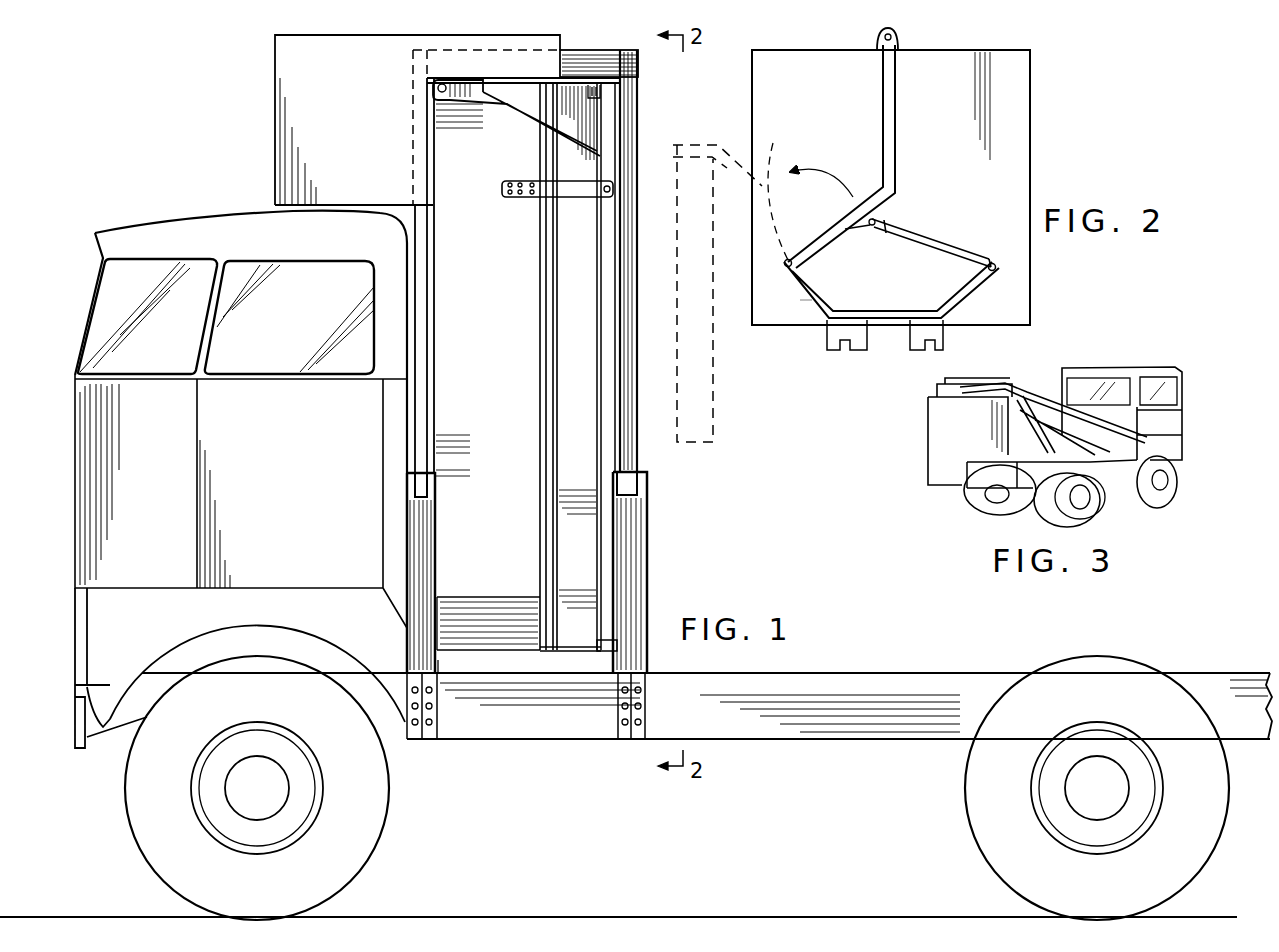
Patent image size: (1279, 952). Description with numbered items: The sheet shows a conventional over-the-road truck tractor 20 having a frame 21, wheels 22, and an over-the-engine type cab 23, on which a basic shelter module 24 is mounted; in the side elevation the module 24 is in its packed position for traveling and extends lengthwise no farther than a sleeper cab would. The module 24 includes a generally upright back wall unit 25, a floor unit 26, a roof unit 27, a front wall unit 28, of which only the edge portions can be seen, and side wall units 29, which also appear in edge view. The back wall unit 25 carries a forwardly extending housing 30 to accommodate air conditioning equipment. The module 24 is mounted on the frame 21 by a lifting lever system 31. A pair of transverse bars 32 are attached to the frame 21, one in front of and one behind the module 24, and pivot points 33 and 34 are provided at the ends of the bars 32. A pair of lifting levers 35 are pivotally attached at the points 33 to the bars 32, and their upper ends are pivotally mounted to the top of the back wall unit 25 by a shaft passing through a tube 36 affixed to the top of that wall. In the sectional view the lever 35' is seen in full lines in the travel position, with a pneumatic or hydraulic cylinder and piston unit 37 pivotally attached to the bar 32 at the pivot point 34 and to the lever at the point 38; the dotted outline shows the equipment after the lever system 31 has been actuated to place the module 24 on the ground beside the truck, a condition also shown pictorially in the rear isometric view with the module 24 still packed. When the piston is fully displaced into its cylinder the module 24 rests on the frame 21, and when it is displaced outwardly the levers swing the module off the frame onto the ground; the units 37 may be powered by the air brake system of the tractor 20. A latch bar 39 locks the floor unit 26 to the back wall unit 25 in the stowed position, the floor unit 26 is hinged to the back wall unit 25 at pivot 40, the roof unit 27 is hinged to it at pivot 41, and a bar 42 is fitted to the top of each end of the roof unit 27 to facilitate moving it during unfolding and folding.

In FIG. 1, the truck tractor 20 is at (803, 748).
In FIG. 3, the truck tractor 20 is at (1120, 498).
In FIG. 1, the frame 21 is at (754, 742).
In FIG. 1, the wheels 22 is at (392, 792).
In FIG. 1, the cab 23 is at (75, 405).
In FIG. 3, the cab 23 is at (1185, 420).
In FIG. 1, the basic module 24 is at (713, 312).
In FIG. 2, the basic module 24 is at (1030, 135).
In FIG. 3, the basic module 24 is at (928, 440).
In FIG. 1, the back wall unit 25 is at (467, 657).
In FIG. 1, the floor unit 26 is at (615, 450).
In FIG. 1, the roof unit 27 is at (598, 150).
In FIG. 1, the front wall unit 28 is at (577, 588).
In FIG. 1, the side wall units 29 is at (545, 640).
In FIG. 1, the housing 30 is at (275, 133).
In FIG. 1, the lifting lever system 31 is at (657, 536).
In FIG. 2, the lifting lever system 31 is at (808, 308).
In FIG. 3, the lifting lever system 31 is at (1025, 378).
In FIG. 1, the transverse bars 32 is at (407, 540).
In FIG. 2, the transverse bars 32 is at (888, 326).
In FIG. 1, the pivot point 33 is at (407, 488).
In FIG. 2, the pivot point 33 is at (785, 268).
In FIG. 2, the pivot point 34 is at (1000, 268).
In FIG. 1, the lifting levers 35 is at (523, 273).
In FIG. 2, the lifting lever 35' is at (870, 156).
In FIG. 1, the tube 36 is at (578, 52).
In FIG. 2, the tube 36 is at (898, 36).
In FIG. 2, the cylinder and piston unit 37 is at (920, 230).
In FIG. 2, the point 38 is at (773, 160).
In FIG. 1, the latch bar 39 is at (513, 200).
In FIG. 1, the pivot 40 is at (605, 645).
In FIG. 1, the pivot 41 is at (612, 94).
In FIG. 1, the bar 42 is at (485, 102).